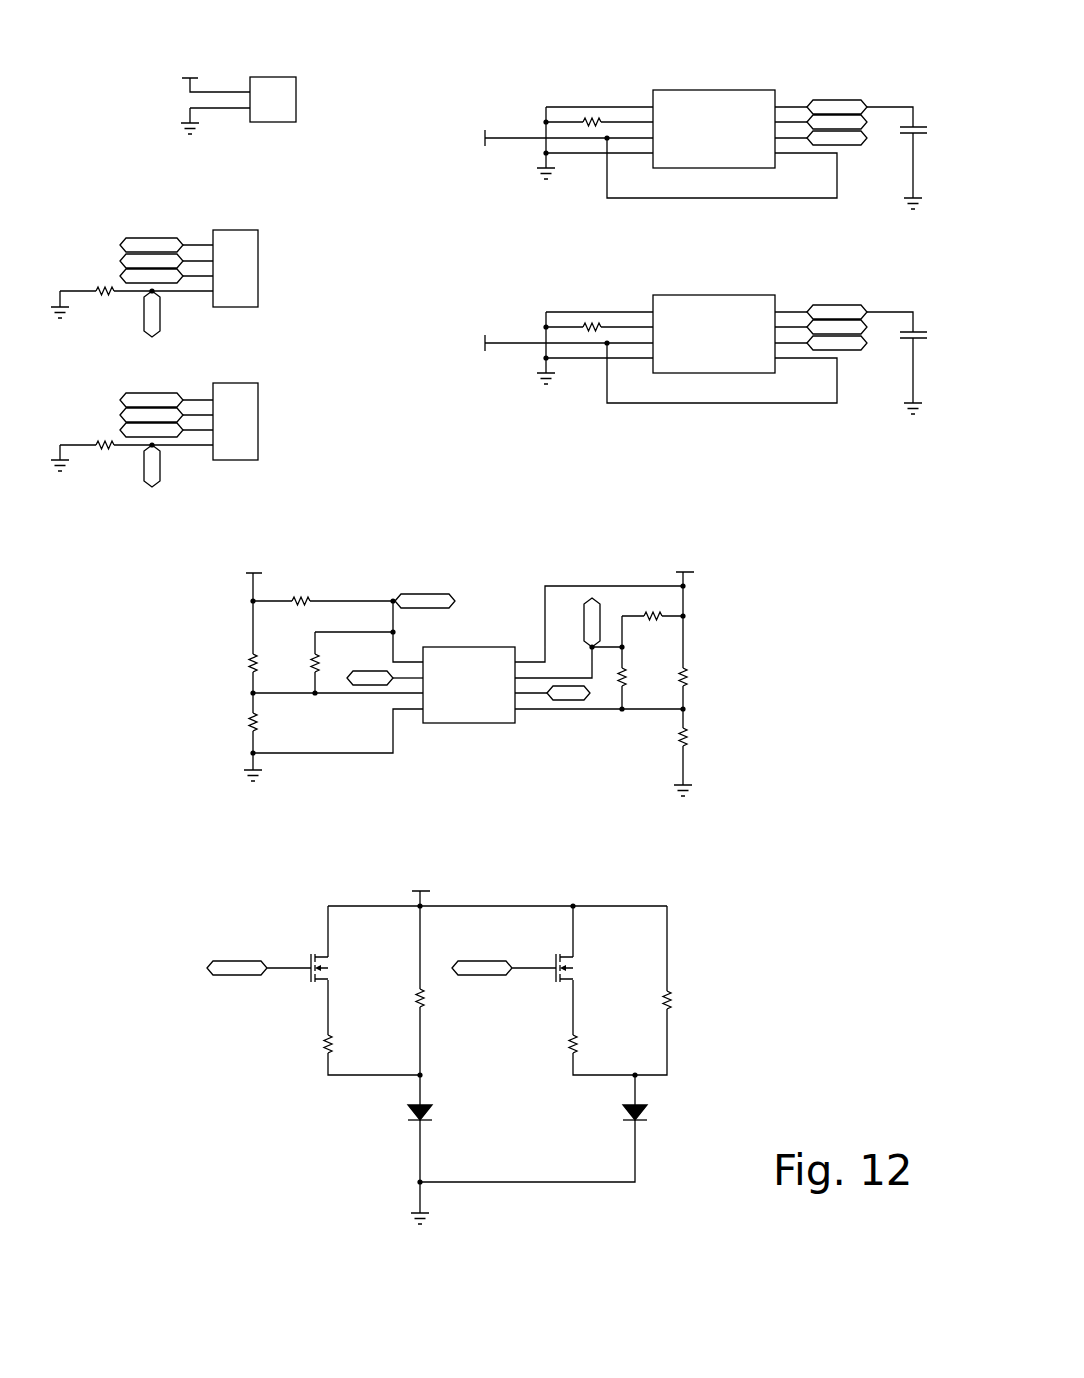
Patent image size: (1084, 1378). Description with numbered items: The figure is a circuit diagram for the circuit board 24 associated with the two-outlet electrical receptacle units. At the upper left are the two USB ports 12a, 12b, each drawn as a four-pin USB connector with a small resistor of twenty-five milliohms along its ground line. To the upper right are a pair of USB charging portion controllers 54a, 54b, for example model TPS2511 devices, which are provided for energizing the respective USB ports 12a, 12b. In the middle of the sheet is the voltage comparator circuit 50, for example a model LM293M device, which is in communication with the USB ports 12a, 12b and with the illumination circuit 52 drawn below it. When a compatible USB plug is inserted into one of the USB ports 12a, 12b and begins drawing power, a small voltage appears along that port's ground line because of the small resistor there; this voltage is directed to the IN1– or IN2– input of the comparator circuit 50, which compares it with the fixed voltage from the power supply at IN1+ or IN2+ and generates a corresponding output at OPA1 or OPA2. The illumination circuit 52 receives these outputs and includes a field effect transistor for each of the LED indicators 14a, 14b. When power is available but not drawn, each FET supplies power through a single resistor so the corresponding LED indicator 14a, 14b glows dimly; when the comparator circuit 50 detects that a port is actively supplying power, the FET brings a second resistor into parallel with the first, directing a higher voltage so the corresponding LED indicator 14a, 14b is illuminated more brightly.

The circuit board 24 is at (488, 42).
The USB port 12a is at (270, 213).
The USB port 12b is at (265, 372).
The USB charging portion controller 54a is at (835, 65).
The USB charging portion controller 54b is at (835, 272).
The voltage comparator circuit 50 is at (555, 518).
The illumination circuit 52 is at (482, 1042).
The LED indicator 14a is at (383, 1125).
The LED indicator 14b is at (690, 1105).